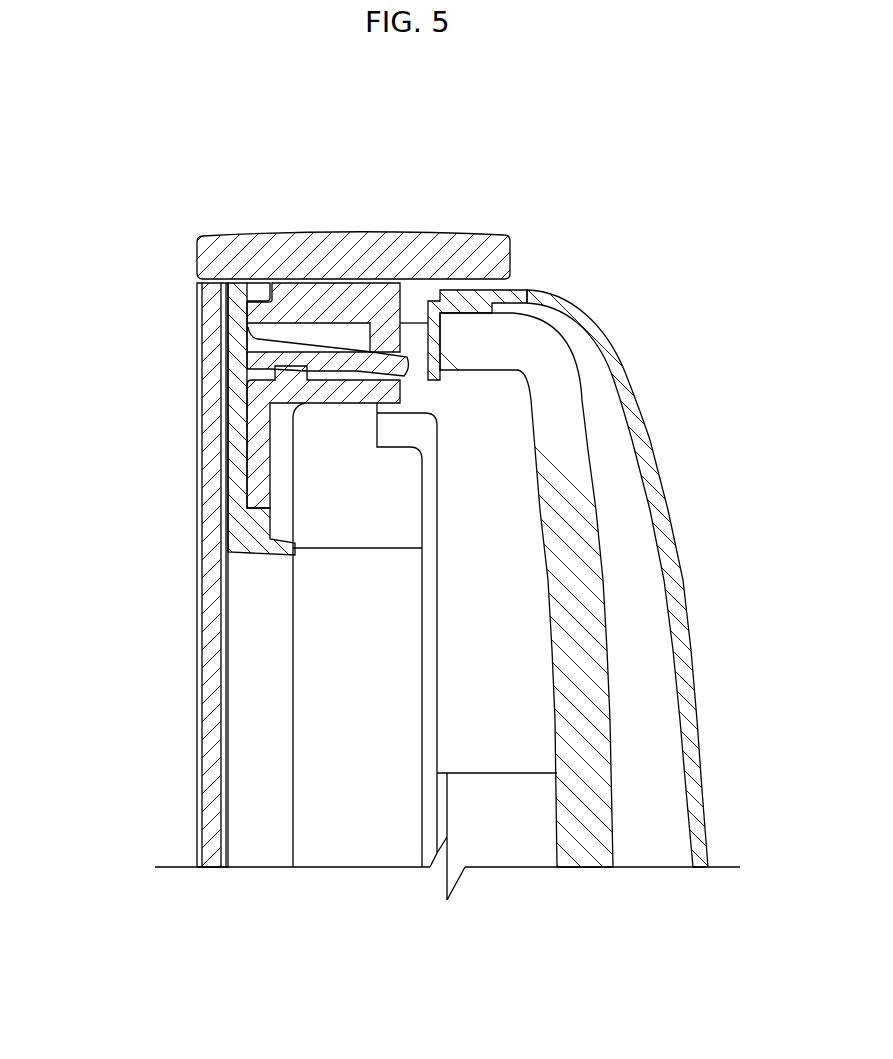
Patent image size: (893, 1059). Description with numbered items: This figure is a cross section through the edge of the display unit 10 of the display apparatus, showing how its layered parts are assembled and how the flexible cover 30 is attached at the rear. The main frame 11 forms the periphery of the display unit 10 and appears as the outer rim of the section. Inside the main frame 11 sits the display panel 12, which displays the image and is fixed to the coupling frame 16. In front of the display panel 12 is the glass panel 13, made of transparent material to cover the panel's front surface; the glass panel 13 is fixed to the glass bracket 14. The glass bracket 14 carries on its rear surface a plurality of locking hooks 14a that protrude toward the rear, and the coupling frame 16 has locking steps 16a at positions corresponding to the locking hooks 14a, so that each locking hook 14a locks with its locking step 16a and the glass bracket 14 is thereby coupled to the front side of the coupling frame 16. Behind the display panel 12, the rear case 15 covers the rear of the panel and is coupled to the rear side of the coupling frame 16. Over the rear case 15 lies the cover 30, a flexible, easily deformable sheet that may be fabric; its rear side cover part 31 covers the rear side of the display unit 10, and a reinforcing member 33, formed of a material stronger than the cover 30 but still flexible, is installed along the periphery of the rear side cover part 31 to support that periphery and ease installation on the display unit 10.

The display unit 10 is at (446, 526).
The main frame 11 is at (250, 258).
The display panel 12 is at (437, 674).
The glass panel 13 is at (212, 476).
The glass bracket 14 is at (245, 358).
The locking hook 14a is at (375, 362).
The rear case 15 is at (578, 438).
The coupling frame 16 is at (312, 298).
The locking step 16a is at (307, 368).
The cover 30 is at (446, 532).
The rear side cover part 31 is at (628, 364).
The reinforcing member 33 is at (432, 318).